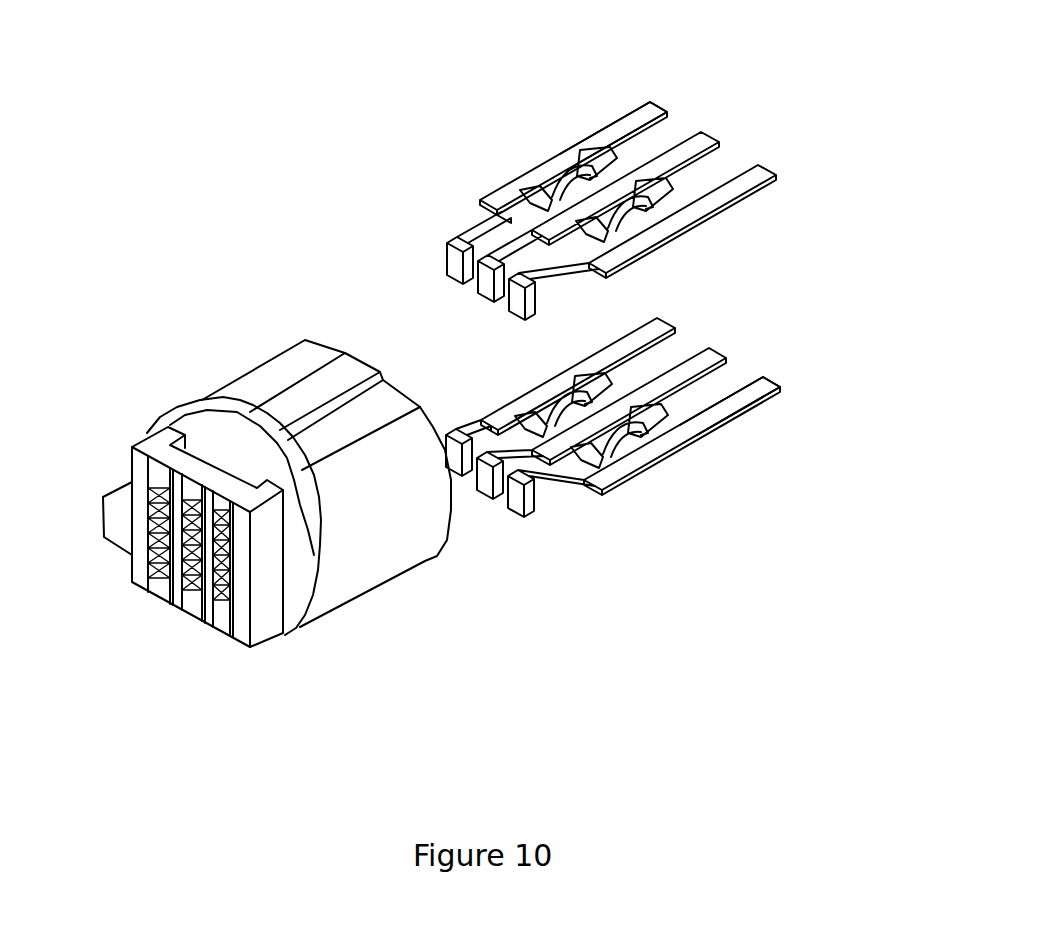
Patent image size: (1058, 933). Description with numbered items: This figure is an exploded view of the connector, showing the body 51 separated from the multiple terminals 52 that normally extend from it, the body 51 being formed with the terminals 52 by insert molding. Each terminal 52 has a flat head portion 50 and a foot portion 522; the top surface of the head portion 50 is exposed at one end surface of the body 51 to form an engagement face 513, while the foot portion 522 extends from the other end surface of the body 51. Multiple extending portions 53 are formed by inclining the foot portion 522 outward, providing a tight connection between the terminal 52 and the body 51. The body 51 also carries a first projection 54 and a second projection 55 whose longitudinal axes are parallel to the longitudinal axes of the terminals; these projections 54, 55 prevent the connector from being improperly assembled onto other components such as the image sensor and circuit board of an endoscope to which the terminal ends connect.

The head portion 50 is at (530, 505).
The body 51 is at (261, 518).
The terminal 52 is at (642, 181).
The foot portion 522 is at (796, 555).
The extending portion 53 is at (725, 155).
The first projection 54 is at (310, 397).
The second projection 55 is at (110, 520).
The engagement face 513 is at (188, 552).